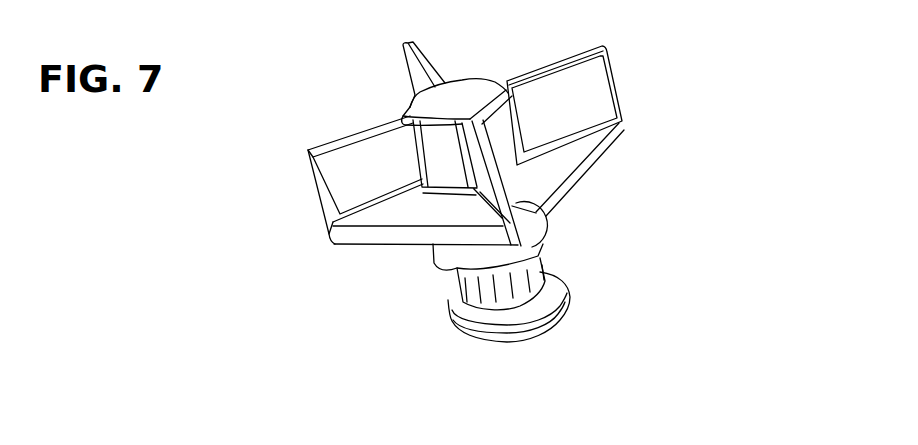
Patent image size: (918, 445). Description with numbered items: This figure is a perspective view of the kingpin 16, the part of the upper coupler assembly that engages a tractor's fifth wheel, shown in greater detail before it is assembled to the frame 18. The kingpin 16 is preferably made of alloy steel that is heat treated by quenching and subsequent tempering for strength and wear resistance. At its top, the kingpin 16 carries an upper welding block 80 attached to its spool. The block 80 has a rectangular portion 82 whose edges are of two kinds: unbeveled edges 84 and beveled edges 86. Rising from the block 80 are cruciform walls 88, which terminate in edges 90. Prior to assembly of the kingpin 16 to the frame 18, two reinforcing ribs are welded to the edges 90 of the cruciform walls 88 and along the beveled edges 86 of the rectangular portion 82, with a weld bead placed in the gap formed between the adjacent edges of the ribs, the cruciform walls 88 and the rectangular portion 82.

The kingpin 16 is at (327, 77).
The frame 18 is at (442, 293).
The upper welding block 80 is at (622, 72).
The rectangular portion 82 is at (390, 216).
The unbeveled edges 84 is at (412, 236).
The beveled edges 86 is at (590, 170).
The cruciform walls 88 is at (335, 184).
The edges of the cruciform walls 90 is at (306, 168).